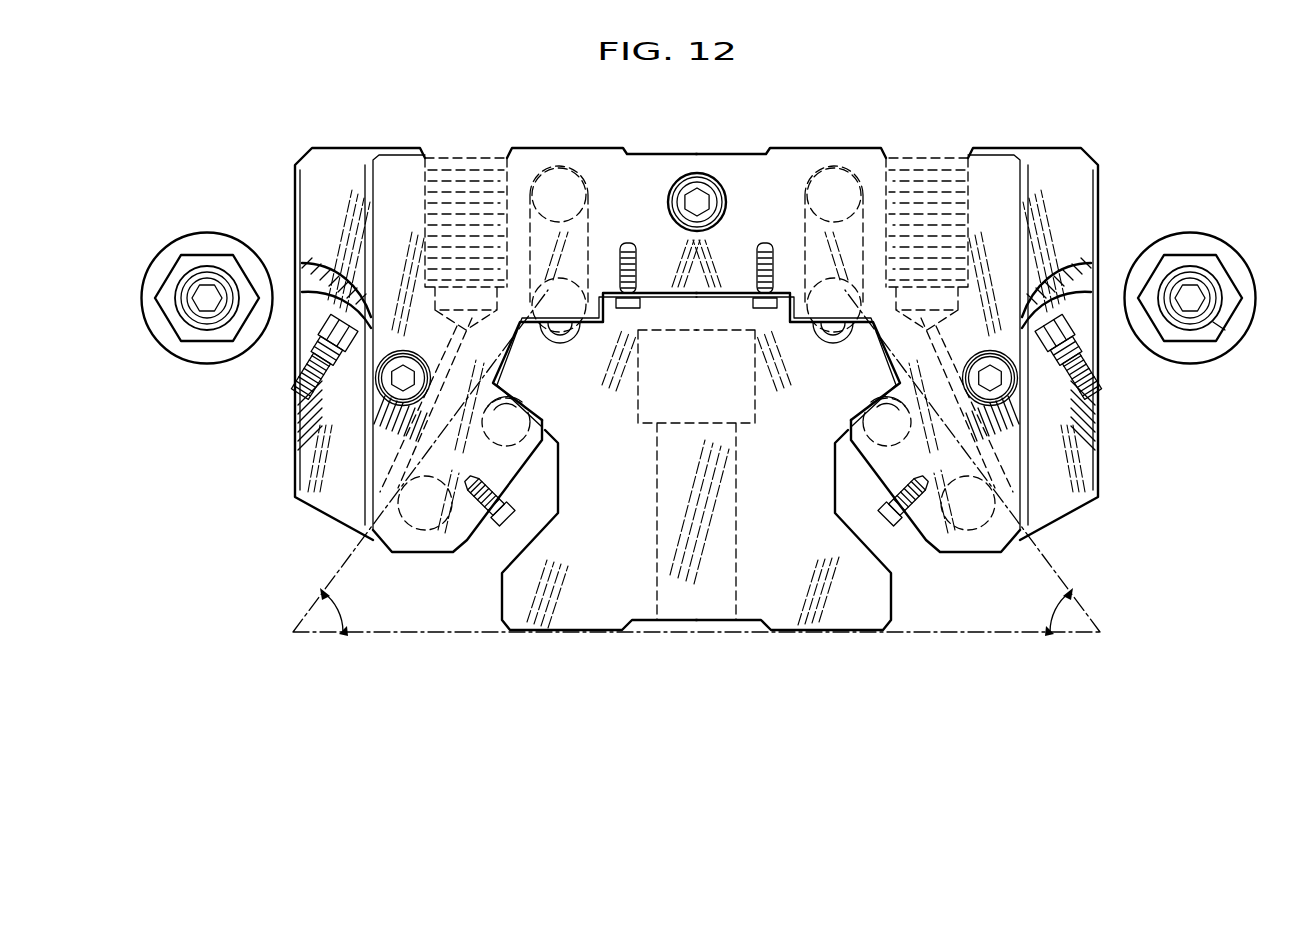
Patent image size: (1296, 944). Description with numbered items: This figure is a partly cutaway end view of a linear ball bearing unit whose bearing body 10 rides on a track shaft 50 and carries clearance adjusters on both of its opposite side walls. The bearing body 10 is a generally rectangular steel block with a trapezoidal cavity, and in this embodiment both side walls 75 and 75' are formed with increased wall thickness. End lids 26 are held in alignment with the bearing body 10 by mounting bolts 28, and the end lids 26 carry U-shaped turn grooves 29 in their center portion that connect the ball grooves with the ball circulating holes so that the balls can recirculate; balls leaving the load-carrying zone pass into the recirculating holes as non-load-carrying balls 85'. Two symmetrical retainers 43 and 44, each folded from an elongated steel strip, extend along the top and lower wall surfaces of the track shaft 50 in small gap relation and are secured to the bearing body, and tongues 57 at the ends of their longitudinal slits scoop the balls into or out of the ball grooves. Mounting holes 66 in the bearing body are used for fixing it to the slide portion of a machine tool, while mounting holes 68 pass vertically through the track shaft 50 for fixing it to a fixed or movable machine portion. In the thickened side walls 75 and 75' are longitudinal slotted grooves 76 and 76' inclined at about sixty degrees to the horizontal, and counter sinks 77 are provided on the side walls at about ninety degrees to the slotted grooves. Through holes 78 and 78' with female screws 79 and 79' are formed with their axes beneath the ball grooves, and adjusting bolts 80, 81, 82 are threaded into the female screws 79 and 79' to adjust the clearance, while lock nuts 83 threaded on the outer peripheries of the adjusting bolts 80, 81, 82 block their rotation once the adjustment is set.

The bearing body 10 is at (790, 146).
The end lid 26 is at (987, 170).
The mounting bolt 28 is at (699, 198).
The U-shaped turn groove 29 is at (696, 405).
The retainer 43 is at (923, 540).
The retainer 44 is at (480, 530).
The track shaft 50 is at (558, 622).
The tongue 57 is at (560, 337).
The mounting hole 66 is at (436, 178).
The mounting hole 68 is at (733, 592).
The side wall 75 is at (1099, 338).
The side wall 75' is at (300, 345).
The slotted groove 76 is at (959, 486).
The slotted groove 76' is at (432, 486).
The counter sink 77 is at (300, 289).
The through hole 78 is at (1027, 407).
The through hole 78' is at (404, 362).
The female screw 79 is at (1030, 415).
The female screw 79' is at (362, 423).
The adjusting bolt 80 is at (700, 328).
The adjusting bolt 81 is at (292, 365).
The adjusting bolt 82 is at (696, 350).
The lock nut 83 is at (1213, 320).
The non-load-carrying ball 85' is at (701, 351).